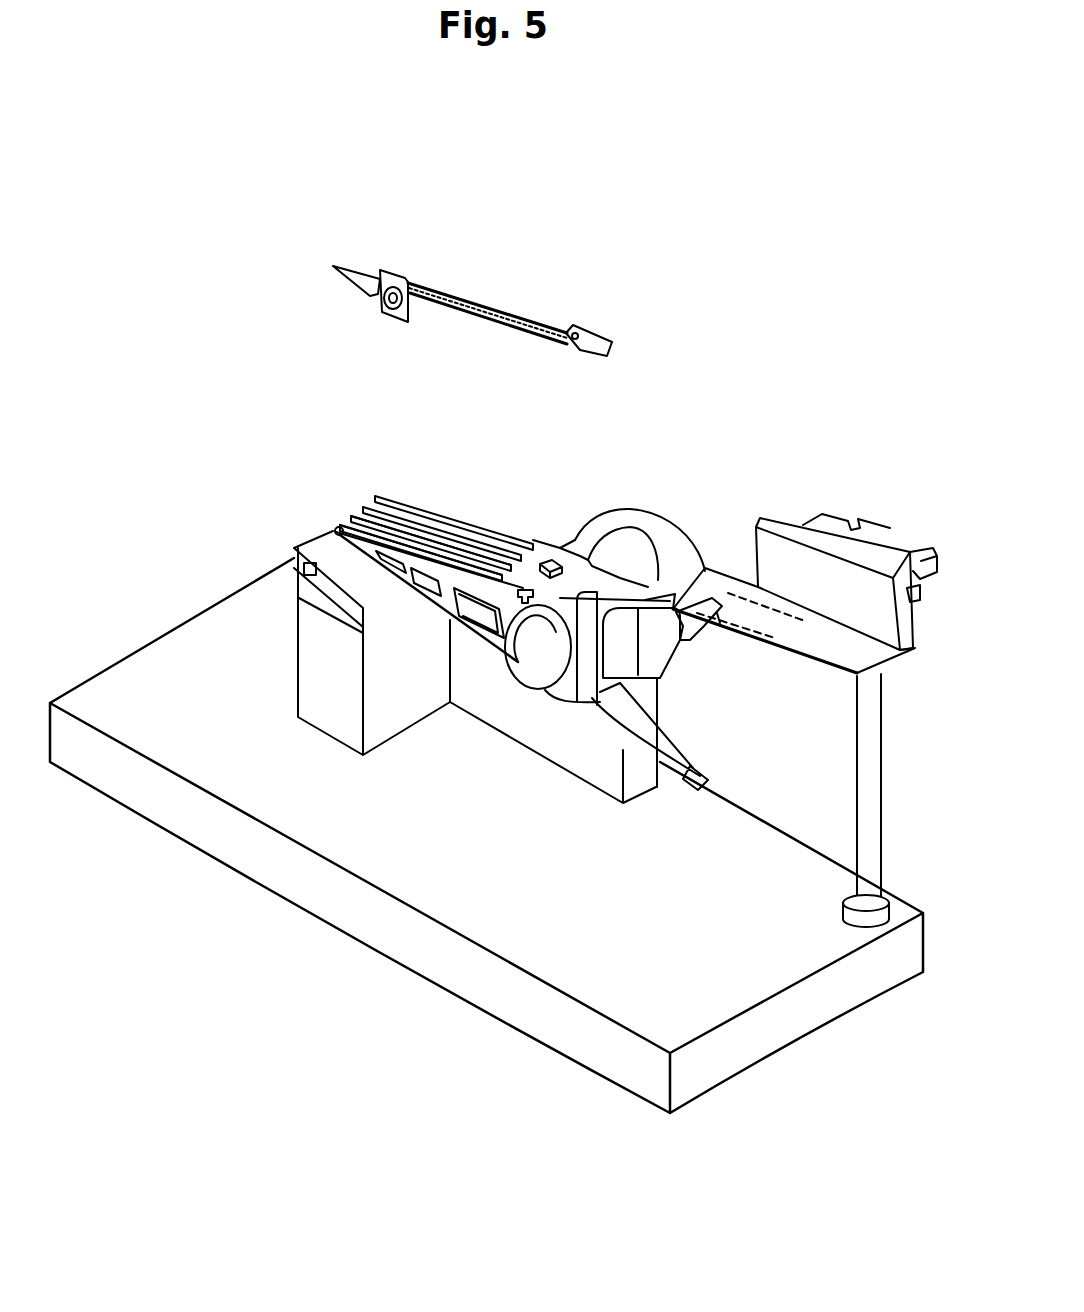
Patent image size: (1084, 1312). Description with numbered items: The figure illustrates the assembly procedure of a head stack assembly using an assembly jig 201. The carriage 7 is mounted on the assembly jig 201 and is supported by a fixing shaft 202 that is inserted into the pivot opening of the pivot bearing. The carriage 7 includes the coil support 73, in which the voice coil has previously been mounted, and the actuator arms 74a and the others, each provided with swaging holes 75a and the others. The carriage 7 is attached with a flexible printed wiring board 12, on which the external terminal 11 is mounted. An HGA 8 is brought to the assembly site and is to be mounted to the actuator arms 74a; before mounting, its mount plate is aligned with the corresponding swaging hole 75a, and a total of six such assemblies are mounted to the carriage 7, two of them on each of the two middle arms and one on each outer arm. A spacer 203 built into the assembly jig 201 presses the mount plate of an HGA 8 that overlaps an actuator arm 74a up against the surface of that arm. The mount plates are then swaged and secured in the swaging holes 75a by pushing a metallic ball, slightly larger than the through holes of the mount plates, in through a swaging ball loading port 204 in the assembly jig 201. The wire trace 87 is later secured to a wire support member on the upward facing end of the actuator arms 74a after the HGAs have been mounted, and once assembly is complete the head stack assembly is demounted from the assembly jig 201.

The HGA 8 is at (472, 300).
The wire trace 87 is at (493, 318).
The spacer 203 is at (350, 514).
The swaging ball loading port 204 is at (306, 574).
The swaging hole 75a is at (346, 546).
The actuator arm 74a is at (364, 546).
The carriage 7 is at (430, 612).
The fixing shaft 202 is at (528, 662).
The coil support 73 is at (657, 748).
The flexible printed wiring board 12 is at (648, 587).
The external terminal 11 is at (874, 600).
The assembly jig 201 is at (525, 1068).